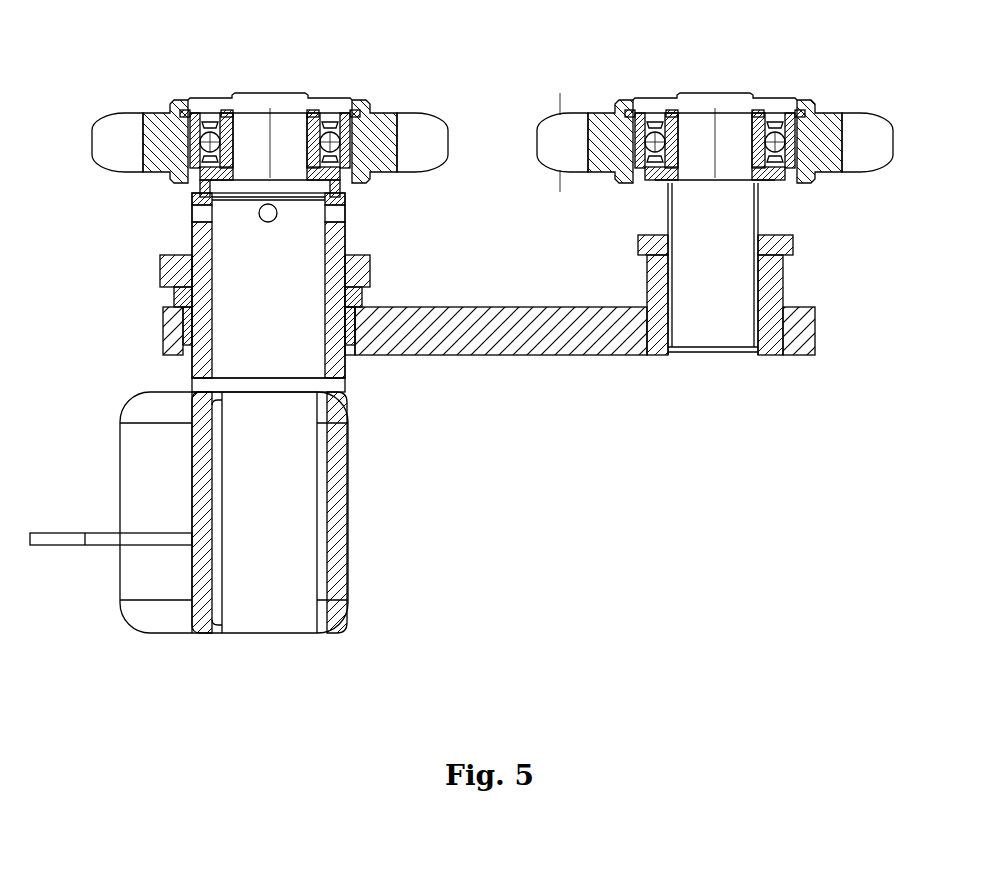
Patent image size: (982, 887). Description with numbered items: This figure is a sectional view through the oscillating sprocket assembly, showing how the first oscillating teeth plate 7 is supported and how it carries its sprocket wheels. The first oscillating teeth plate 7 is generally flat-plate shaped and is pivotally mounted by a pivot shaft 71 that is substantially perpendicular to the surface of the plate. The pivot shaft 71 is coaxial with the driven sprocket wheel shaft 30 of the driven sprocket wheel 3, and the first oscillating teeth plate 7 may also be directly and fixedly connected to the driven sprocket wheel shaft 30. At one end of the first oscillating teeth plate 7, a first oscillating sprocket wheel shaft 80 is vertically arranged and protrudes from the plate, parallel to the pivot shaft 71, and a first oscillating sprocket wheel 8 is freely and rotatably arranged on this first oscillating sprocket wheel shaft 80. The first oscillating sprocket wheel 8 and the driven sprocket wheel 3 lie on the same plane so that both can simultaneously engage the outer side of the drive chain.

The driven sprocket wheel 3 is at (162, 128).
The driven sprocket wheel shaft 30 is at (230, 235).
The first oscillating teeth plate 7 is at (500, 325).
The pivot shaft 71 is at (345, 333).
The first oscillating sprocket wheel 8 is at (865, 128).
The first oscillating sprocket wheel shaft 80 is at (742, 220).